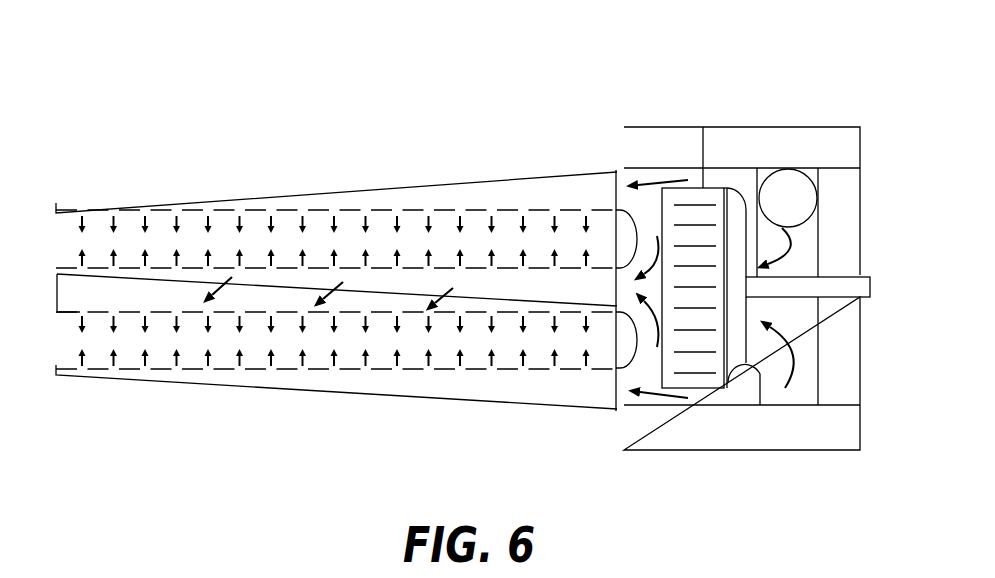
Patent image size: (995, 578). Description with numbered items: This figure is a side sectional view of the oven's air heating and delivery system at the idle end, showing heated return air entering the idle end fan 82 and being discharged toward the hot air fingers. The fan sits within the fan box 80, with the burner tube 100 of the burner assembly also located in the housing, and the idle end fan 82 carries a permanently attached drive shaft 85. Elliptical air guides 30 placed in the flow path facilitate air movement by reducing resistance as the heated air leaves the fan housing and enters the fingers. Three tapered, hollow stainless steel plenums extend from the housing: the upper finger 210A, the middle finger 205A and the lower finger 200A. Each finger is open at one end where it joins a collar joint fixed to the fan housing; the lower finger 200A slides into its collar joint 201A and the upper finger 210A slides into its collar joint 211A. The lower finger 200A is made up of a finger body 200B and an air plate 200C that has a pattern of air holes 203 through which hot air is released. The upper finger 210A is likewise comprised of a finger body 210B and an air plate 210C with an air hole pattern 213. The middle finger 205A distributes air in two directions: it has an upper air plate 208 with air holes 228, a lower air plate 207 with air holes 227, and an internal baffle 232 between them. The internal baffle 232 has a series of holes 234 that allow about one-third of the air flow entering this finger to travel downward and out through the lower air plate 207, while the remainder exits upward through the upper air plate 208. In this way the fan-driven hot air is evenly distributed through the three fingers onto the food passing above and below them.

The elliptical air guide 30 is at (638, 354).
The fan box 80 is at (759, 117).
The idle end fan 82 is at (703, 127).
The drive shaft 85 is at (841, 277).
The burner tube 100 is at (802, 210).
The lower finger 200A is at (602, 400).
The finger body 200B is at (515, 386).
The air plate 200C is at (448, 370).
The collar joint 201A is at (617, 411).
The air holes 203 is at (405, 370).
The middle finger 205A is at (600, 300).
The lower air plate 207 is at (165, 313).
The upper air plate 208 is at (163, 269).
The upper finger 210A is at (600, 204).
The finger body 210B is at (512, 194).
The air plate 210C is at (478, 209).
The collar joint 211A is at (617, 172).
The air hole pattern 213 is at (367, 212).
The air holes 227 is at (80, 313).
The air holes 228 is at (112, 271).
The internal baffle 232 is at (168, 283).
The holes 234 is at (223, 288).